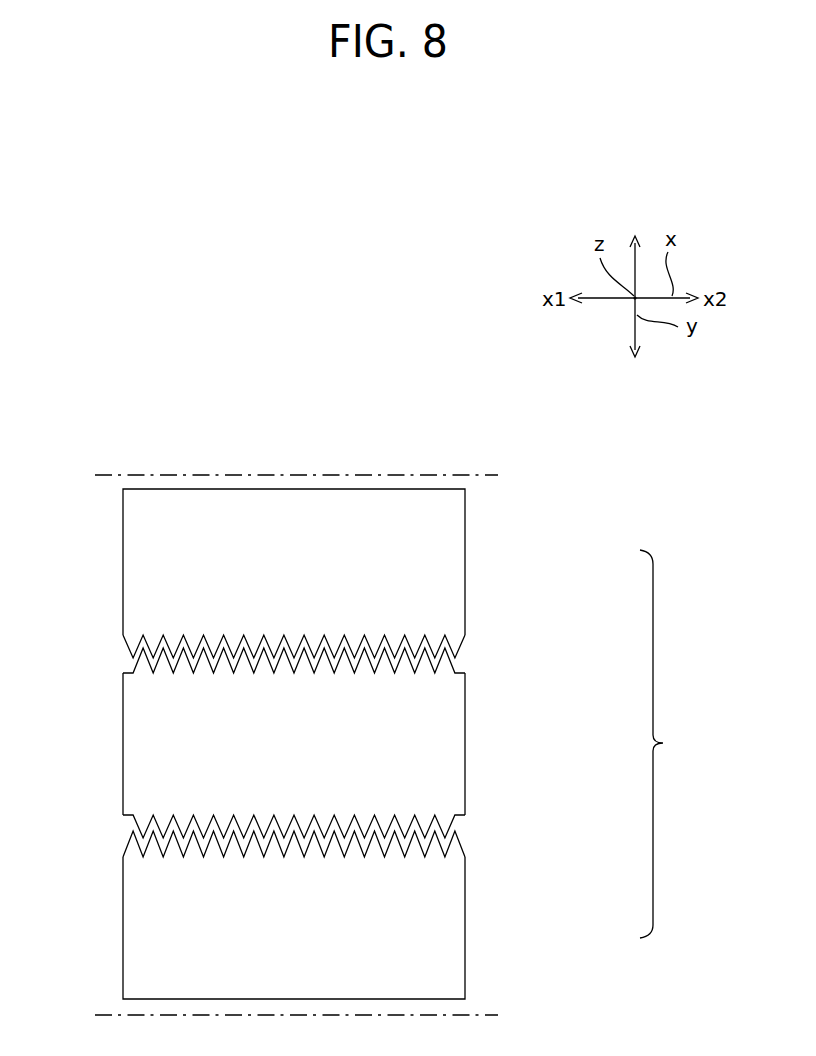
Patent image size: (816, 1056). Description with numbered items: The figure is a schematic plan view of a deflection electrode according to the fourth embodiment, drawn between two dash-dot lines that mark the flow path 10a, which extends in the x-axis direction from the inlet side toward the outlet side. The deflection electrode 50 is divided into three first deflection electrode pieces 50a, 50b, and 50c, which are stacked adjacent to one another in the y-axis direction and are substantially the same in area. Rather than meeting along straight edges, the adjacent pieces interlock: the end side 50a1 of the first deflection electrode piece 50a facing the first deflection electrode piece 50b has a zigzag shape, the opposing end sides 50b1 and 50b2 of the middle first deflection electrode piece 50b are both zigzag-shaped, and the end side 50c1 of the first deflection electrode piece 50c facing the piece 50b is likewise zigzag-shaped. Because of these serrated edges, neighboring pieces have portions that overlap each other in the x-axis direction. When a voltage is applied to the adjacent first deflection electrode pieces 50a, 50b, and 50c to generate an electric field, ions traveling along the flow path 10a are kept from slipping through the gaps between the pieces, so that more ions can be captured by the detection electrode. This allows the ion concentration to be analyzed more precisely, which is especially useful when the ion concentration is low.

The flow path 10a is at (478, 478).
The first deflection electrode 50 is at (360, 744).
The first deflection electrode piece 50a is at (378, 891).
The end side of the first deflection electrode piece 50a 50a1 is at (462, 843).
The first deflection electrode piece 50b is at (325, 750).
The end side of the first deflection electrode piece 50b 50b1 is at (127, 832).
The end side of the first deflection electrode piece 50b 50b2 is at (128, 668).
The first deflection electrode piece 50c is at (377, 589).
The end side of the first deflection electrode piece 50c 50c1 is at (462, 652).